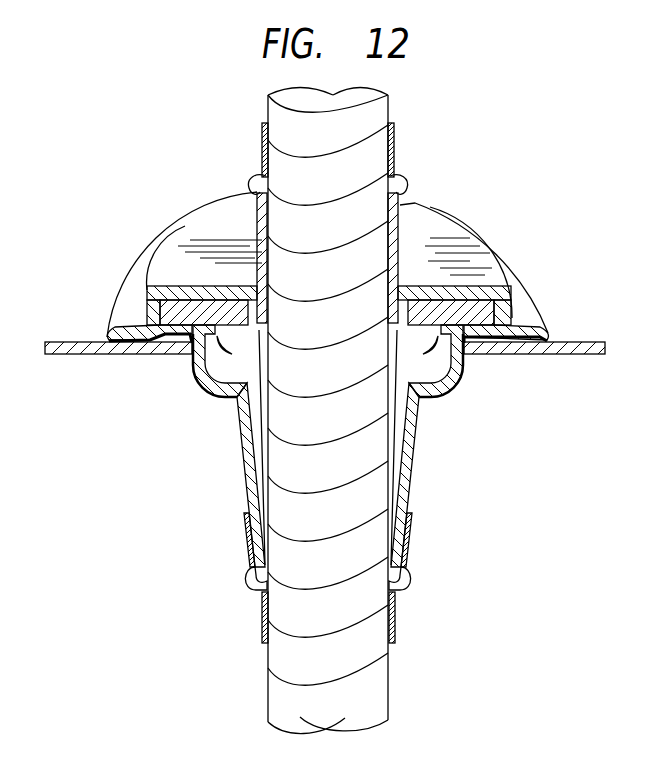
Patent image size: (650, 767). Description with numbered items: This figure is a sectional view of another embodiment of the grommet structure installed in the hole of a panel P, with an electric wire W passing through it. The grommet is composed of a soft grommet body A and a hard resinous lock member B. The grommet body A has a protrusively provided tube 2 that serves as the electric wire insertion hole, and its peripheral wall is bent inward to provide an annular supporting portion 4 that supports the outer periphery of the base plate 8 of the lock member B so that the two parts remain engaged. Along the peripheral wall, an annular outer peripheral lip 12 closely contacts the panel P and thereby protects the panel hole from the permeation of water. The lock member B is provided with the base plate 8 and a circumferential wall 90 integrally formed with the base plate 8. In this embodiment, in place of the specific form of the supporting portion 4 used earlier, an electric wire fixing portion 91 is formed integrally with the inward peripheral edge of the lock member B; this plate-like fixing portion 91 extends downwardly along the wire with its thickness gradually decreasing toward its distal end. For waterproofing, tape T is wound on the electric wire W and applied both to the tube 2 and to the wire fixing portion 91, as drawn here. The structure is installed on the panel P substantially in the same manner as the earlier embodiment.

The wire harness W is at (280, 112).
The tape T is at (394, 148).
The tube 2 is at (400, 218).
The grommet body A is at (148, 250).
The supporting portion 4 is at (158, 348).
The base plate 8 is at (493, 305).
The resinous lock member B is at (195, 403).
The circumferential wall 90 is at (462, 358).
The electric wire fixing portion 91 is at (407, 460).
The panel P is at (78, 353).
The annular outer peripheral lip 12 is at (532, 352).